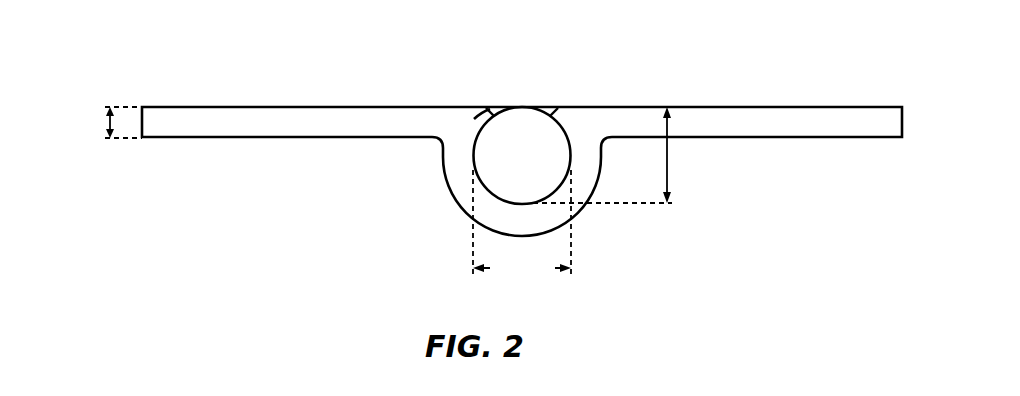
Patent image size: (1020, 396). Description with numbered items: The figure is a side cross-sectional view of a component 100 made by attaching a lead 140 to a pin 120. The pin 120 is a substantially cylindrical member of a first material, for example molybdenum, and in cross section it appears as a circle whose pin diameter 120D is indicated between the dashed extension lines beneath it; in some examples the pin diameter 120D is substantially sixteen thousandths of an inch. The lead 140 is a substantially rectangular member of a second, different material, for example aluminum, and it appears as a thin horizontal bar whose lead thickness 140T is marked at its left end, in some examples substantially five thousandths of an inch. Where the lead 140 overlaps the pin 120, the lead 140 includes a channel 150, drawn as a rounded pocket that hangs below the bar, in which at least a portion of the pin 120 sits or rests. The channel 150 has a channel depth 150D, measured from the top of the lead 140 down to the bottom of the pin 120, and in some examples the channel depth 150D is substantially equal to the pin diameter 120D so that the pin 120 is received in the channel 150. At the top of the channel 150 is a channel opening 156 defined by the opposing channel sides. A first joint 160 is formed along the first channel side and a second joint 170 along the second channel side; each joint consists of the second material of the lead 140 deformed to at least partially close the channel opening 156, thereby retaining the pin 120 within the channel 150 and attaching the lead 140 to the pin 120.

The component 100 is at (749, 64).
The pin 120 is at (522, 113).
The lead 140 is at (766, 107).
The lead thickness 140T is at (106, 122).
The channel 150 is at (486, 190).
The channel depth 150D is at (615, 155).
The pin diameter 120D is at (522, 226).
The channel opening 156 is at (494, 112).
The first joint 160 is at (478, 116).
The second joint 170 is at (565, 113).